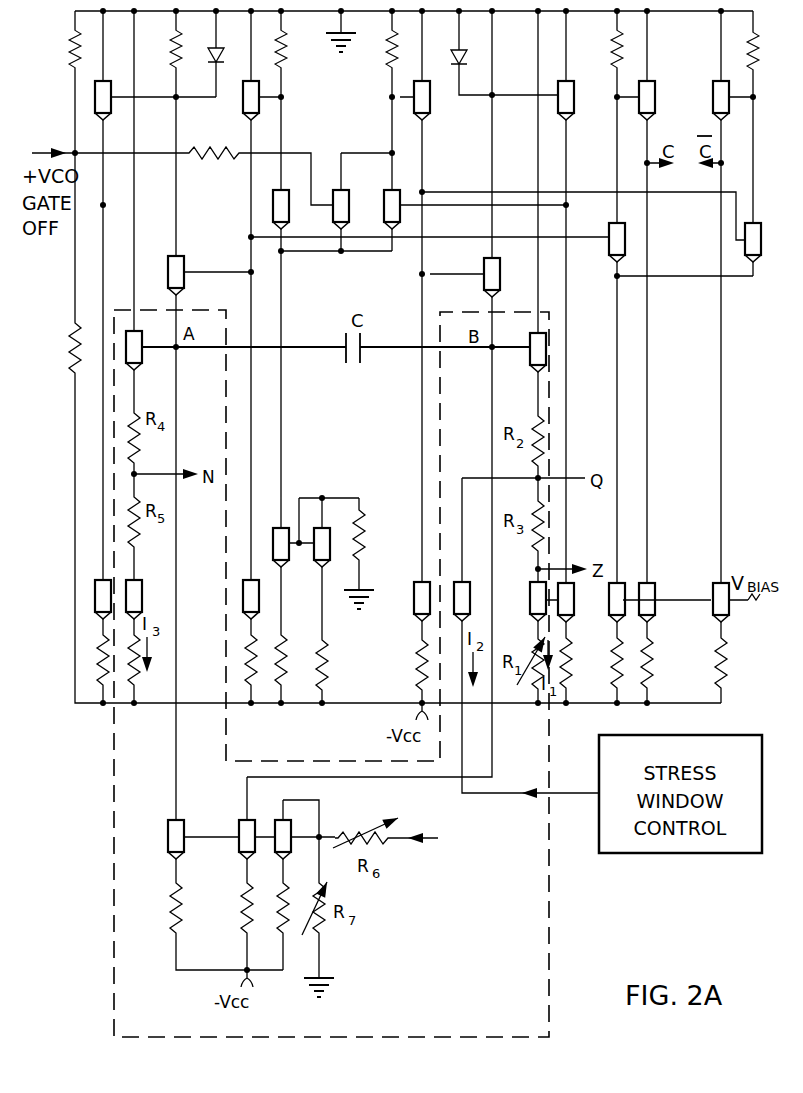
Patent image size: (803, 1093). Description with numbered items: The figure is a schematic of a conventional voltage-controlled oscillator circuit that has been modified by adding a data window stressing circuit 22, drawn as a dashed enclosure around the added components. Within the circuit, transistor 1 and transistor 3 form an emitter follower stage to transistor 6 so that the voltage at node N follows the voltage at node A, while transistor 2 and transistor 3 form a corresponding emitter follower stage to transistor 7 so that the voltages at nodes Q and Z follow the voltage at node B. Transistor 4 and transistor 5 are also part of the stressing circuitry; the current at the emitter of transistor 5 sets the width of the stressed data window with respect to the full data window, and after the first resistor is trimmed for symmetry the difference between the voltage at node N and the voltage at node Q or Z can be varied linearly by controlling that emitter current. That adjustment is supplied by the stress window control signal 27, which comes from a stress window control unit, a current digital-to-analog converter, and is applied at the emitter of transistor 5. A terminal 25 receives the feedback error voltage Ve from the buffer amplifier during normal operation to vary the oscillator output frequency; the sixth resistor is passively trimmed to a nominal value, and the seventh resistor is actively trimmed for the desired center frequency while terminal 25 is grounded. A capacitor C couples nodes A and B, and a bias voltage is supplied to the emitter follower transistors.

The transistor T1 1 is at (134, 350).
The transistor T2 2 is at (538, 352).
The transistor T3 3 is at (134, 599).
The transistor T4 4 is at (538, 601).
The transistor T5 5 is at (462, 601).
The transistor T6 6 is at (176, 275).
The transistor T7 7 is at (492, 277).
The data window stressing circuit 22 is at (549, 938).
The terminal 25 is at (428, 841).
The stress window control signal 27 is at (523, 796).